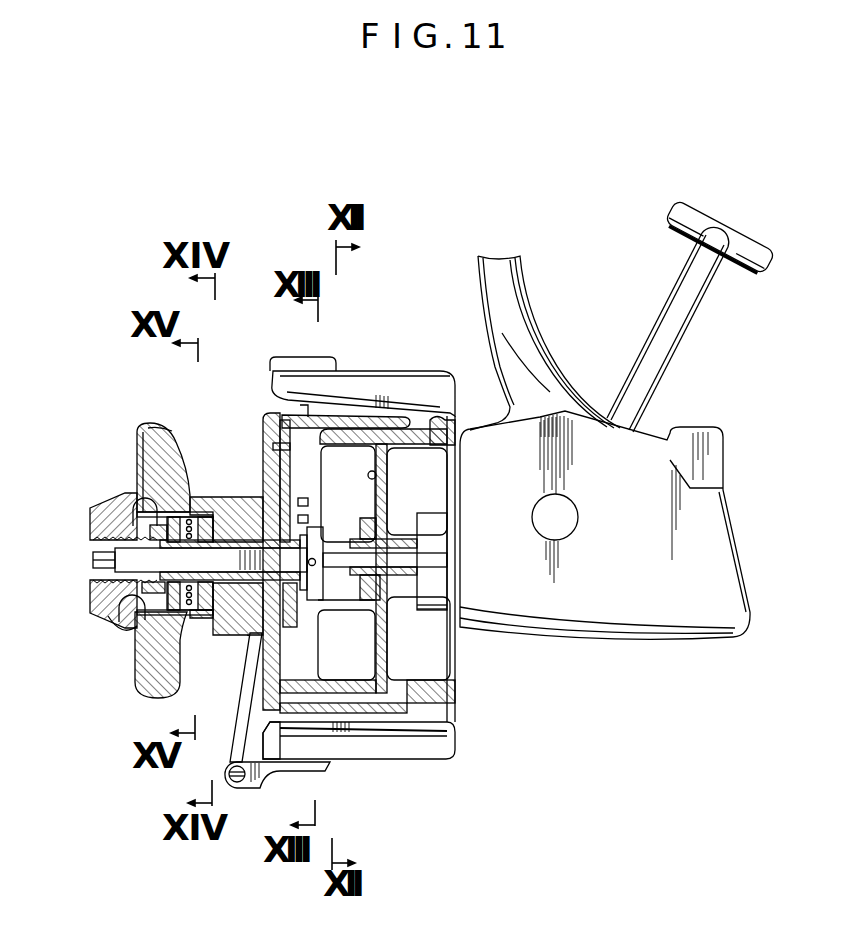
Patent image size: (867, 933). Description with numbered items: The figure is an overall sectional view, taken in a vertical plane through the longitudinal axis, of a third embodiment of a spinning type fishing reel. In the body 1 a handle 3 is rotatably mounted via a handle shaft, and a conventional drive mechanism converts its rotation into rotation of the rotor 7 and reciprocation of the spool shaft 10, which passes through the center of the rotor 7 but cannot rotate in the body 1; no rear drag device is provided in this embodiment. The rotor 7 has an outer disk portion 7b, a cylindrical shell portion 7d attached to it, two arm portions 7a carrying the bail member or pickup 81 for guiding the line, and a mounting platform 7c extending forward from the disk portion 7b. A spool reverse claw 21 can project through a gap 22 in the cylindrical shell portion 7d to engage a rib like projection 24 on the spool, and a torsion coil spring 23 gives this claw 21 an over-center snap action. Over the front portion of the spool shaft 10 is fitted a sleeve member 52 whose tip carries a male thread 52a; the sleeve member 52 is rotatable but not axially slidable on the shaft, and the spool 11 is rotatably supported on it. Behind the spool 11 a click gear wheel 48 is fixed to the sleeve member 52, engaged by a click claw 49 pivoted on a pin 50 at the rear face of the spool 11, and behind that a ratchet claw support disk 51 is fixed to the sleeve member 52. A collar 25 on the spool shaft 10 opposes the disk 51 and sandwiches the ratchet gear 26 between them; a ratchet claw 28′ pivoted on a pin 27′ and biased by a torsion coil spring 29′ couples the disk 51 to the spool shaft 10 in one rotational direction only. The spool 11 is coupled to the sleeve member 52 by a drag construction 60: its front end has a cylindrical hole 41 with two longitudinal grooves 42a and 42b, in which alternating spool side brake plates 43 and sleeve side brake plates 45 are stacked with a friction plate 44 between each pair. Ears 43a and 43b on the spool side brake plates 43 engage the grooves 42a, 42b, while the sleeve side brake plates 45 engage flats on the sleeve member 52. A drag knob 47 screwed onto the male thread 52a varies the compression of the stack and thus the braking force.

The body 1 is at (603, 637).
The handle 3 is at (690, 312).
The rotor 7 is at (444, 695).
The arm portions 7a is at (430, 372).
The disk portion 7b is at (388, 657).
The mounting projection or platform 7c is at (350, 603).
The cylindrical shell portion 7d is at (333, 695).
The spool shaft 10 is at (450, 553).
The spool 11 is at (172, 426).
The spool reverse claw 21 is at (418, 638).
The gap 22 is at (302, 615).
The torsion coil spring 23 is at (387, 473).
The rib like projection 24 is at (323, 600).
The collar 25 is at (325, 545).
The ratchet gear 26 is at (315, 525).
The pin 27′ is at (310, 492).
The ratchet claw 28′ is at (272, 493).
The torsion coil spring 29′ is at (283, 503).
The cylindrical hole 41 is at (123, 612).
The groove 42a is at (137, 498).
The groove 42b is at (123, 628).
The spool side brake plates 43 is at (185, 613).
The projecting ear 43a is at (220, 488).
The projecting ear 43b is at (225, 662).
The friction plates 44 is at (203, 512).
The sleeve side brake plates 45 is at (170, 512).
The drag knob 47 is at (90, 514).
The click gear wheel 48 is at (283, 604).
The click claw 49 is at (285, 420).
The pin 50 is at (265, 475).
The ratchet claw support disk 51 is at (253, 631).
The sleeve member 52 is at (243, 541).
The male thread 52a is at (95, 504).
The drag construction 60 is at (72, 492).
The bail member or pickup 81 is at (246, 714).